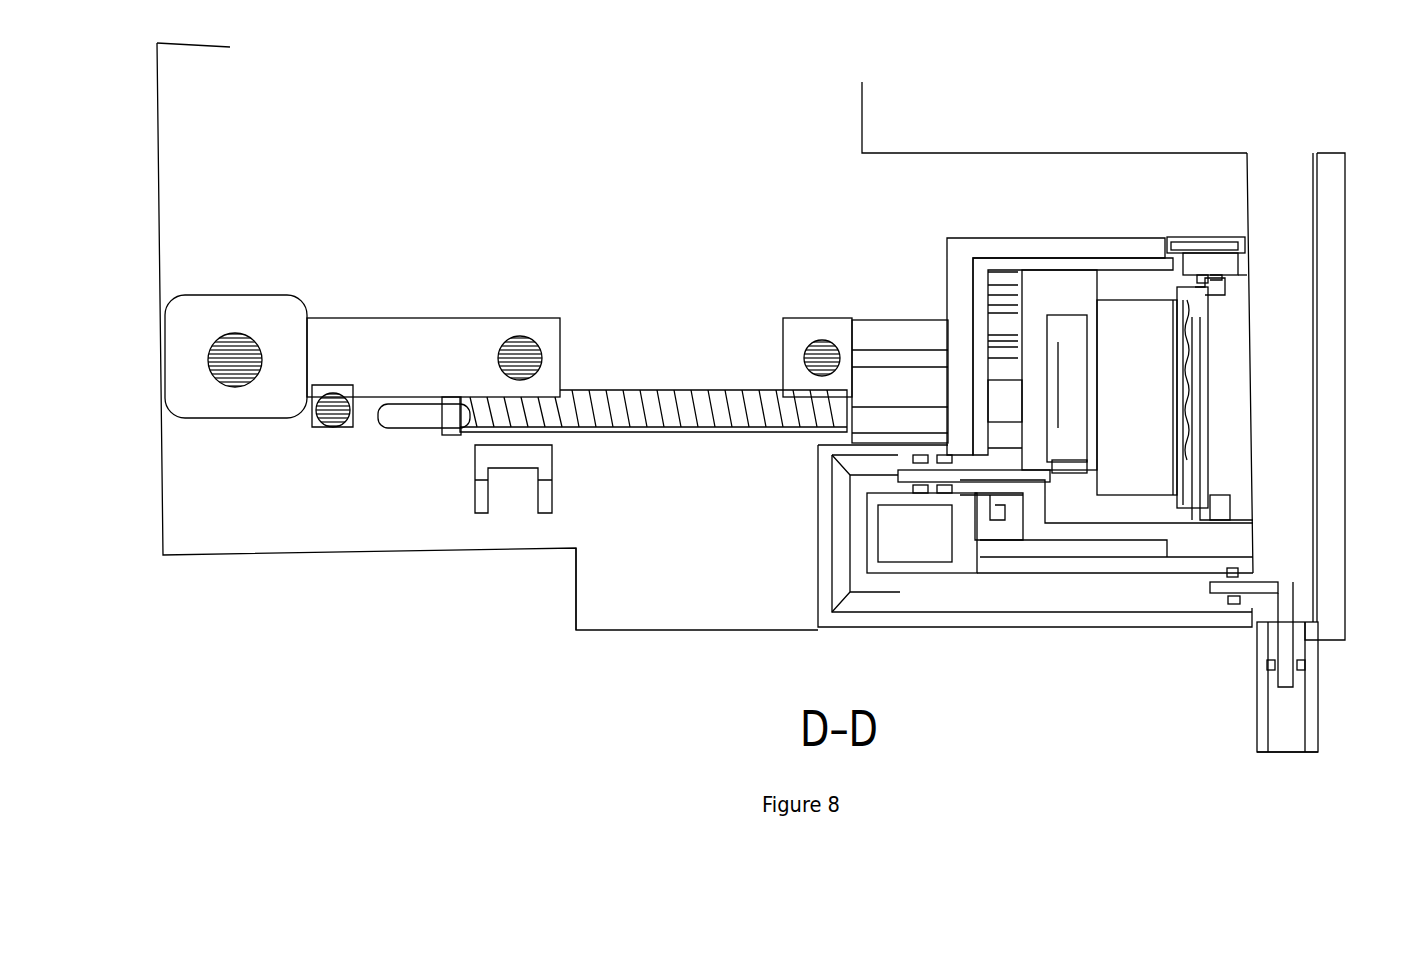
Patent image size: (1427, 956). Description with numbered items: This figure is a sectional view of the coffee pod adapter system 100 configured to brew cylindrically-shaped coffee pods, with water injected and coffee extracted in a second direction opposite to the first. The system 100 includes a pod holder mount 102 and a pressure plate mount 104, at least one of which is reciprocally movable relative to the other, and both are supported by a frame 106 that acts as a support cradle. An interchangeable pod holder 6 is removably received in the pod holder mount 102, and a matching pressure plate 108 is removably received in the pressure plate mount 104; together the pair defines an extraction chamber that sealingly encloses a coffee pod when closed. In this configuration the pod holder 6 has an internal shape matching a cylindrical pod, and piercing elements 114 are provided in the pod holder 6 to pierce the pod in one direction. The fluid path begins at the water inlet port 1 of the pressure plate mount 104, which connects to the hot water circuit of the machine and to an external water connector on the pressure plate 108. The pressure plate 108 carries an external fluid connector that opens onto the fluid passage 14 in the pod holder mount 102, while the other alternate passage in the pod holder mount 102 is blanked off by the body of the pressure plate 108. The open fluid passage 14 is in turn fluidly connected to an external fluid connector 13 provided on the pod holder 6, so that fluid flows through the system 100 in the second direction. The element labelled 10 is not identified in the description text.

The coffee pod adapter system 100 is at (906, 79).
The frame 106 is at (572, 598).
The pod holder mount 102 is at (1046, 236).
The piercing elements 114 is at (1073, 393).
The pod holder 6 is at (1198, 236).
The pressure plate 108 is at (1277, 152).
The pressure plate mount 104 is at (1348, 510).
The fluid passage 14 is at (1106, 595).
The external fluid connector 13 is at (1213, 598).
The outlet tube 10 is at (1302, 677).
The water inlet port 1 is at (1320, 743).